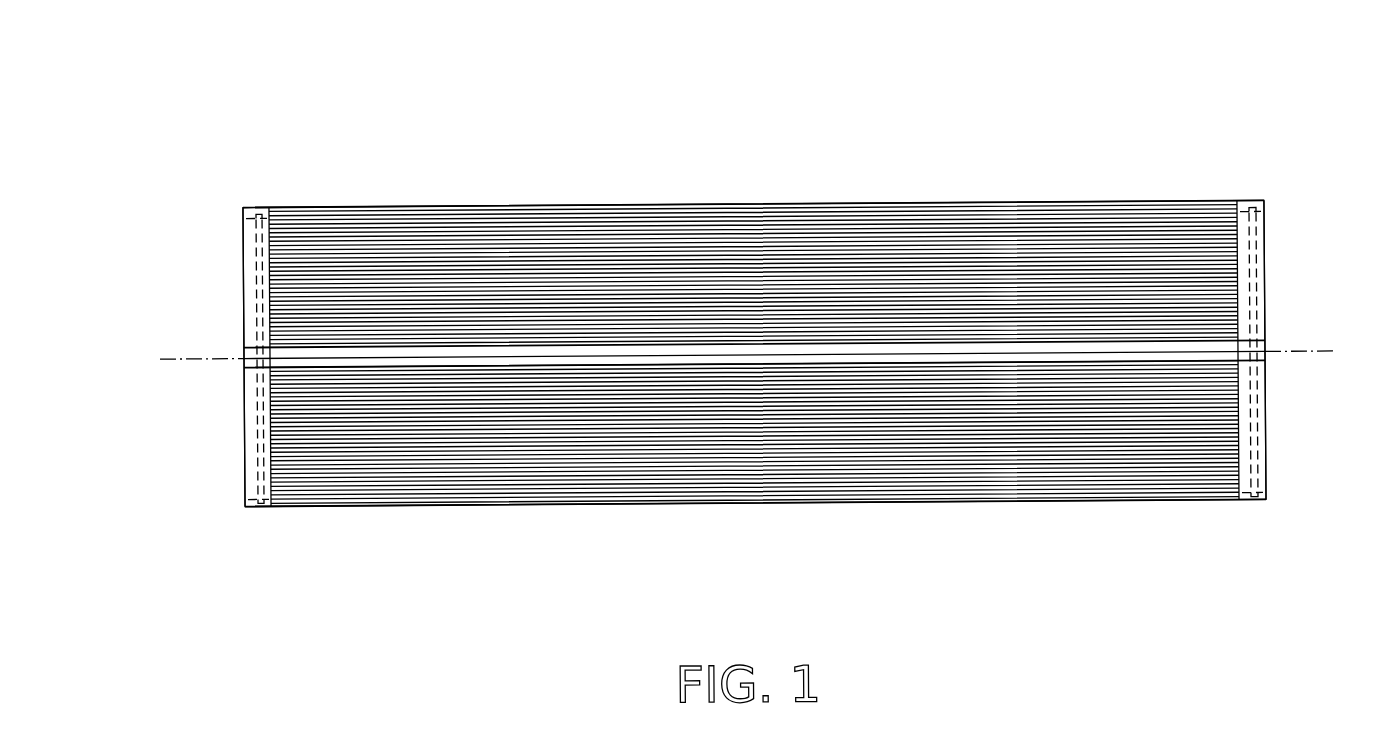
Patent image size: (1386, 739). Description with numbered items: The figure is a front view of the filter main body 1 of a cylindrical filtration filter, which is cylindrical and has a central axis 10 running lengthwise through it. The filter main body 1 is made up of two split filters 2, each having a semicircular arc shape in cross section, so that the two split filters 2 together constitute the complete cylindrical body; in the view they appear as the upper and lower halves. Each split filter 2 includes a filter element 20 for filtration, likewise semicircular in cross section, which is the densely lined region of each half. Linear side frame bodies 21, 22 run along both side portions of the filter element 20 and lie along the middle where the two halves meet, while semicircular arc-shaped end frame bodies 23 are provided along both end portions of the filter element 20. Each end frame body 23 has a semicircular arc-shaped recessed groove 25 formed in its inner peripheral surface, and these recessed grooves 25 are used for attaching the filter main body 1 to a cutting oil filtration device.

The filter main body 1 is at (203, 153).
The split filter 2 is at (724, 188).
The central axis 10 is at (226, 352).
The filter element 20 is at (929, 204).
The side frame body 21 is at (1090, 349).
The side frame body 22 is at (1135, 361).
The end frame body 23 is at (258, 204).
The recessed groove 25 is at (257, 246).